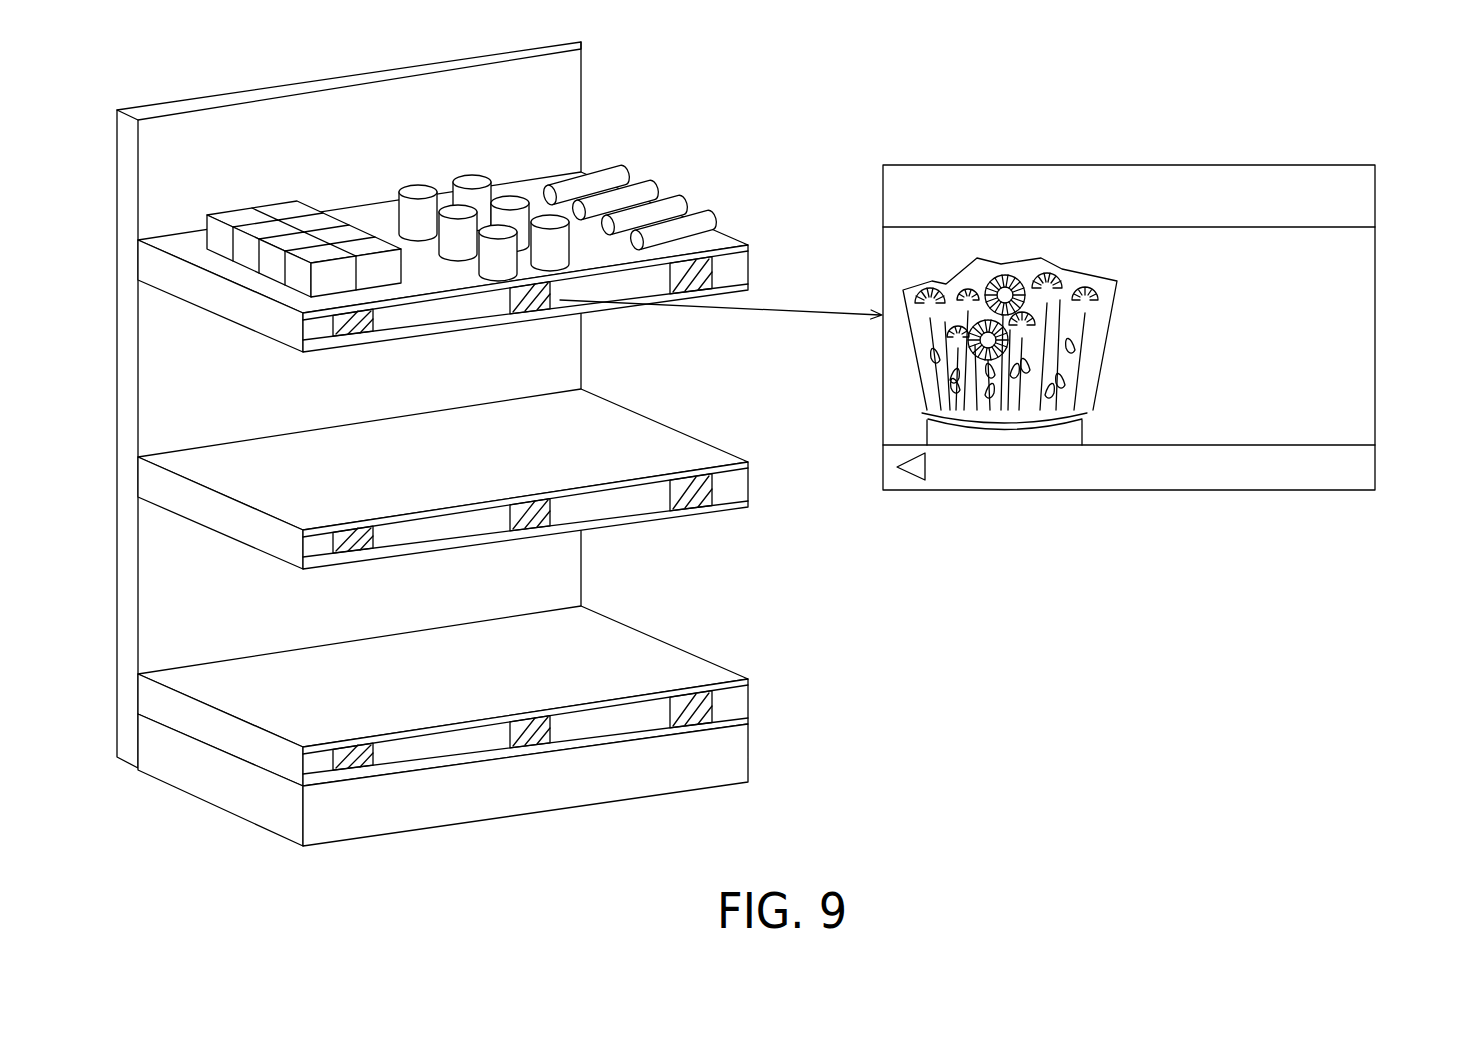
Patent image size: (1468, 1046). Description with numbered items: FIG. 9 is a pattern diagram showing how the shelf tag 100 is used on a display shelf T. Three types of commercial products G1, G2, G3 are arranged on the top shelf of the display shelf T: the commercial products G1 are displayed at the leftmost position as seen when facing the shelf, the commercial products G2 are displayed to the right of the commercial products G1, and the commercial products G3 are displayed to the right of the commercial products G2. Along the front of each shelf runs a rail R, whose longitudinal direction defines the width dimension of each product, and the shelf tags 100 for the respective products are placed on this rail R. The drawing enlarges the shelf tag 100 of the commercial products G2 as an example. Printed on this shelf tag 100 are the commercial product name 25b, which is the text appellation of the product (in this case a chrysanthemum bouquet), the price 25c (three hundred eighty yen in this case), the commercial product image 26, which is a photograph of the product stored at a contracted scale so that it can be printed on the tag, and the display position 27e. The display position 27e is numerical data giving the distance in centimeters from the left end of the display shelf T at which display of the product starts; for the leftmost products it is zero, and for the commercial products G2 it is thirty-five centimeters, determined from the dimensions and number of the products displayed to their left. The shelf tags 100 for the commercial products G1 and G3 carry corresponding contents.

The shelf tag 100 is at (716, 266).
The display shelf T is at (227, 304).
The rail R is at (742, 267).
The commercial products G1 is at (243, 214).
The commercial products G2 is at (470, 181).
The commercial products G3 is at (608, 174).
The commercial product name 25b is at (1325, 271).
The price 25c is at (1357, 380).
The commercial product image 26 is at (899, 384).
The display position 27e is at (956, 495).